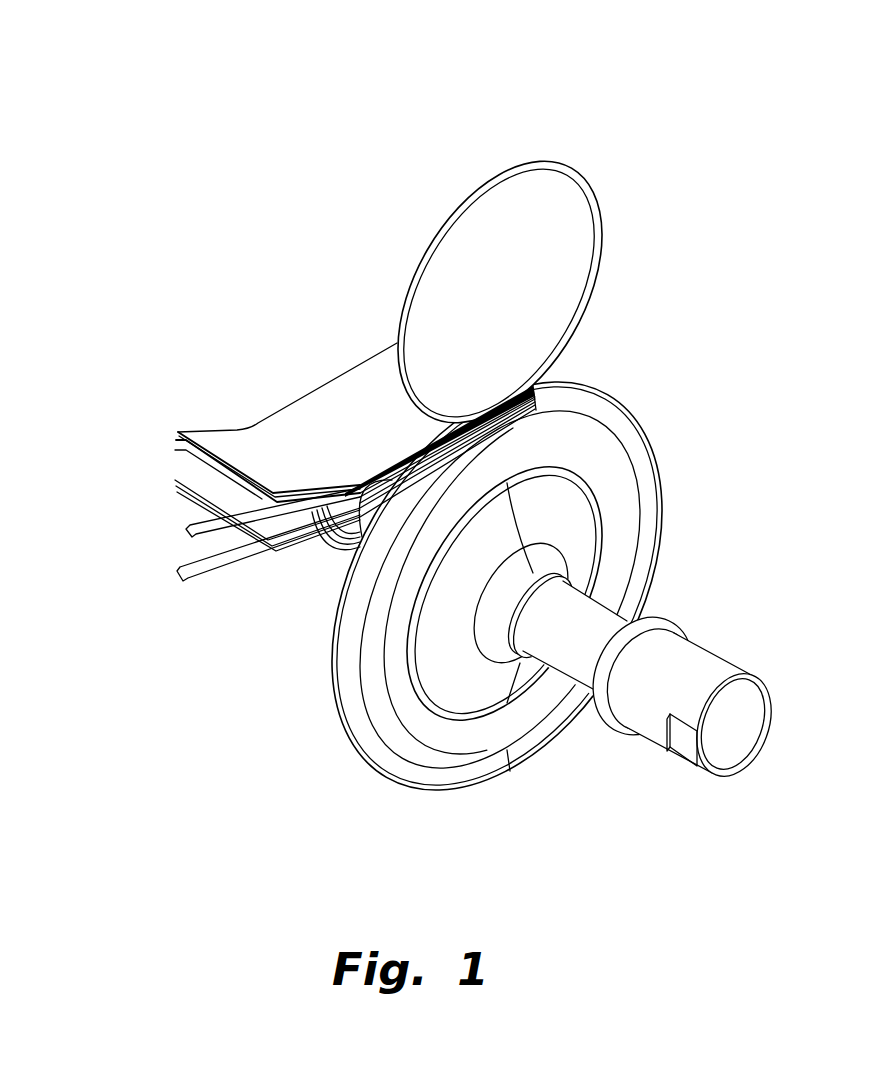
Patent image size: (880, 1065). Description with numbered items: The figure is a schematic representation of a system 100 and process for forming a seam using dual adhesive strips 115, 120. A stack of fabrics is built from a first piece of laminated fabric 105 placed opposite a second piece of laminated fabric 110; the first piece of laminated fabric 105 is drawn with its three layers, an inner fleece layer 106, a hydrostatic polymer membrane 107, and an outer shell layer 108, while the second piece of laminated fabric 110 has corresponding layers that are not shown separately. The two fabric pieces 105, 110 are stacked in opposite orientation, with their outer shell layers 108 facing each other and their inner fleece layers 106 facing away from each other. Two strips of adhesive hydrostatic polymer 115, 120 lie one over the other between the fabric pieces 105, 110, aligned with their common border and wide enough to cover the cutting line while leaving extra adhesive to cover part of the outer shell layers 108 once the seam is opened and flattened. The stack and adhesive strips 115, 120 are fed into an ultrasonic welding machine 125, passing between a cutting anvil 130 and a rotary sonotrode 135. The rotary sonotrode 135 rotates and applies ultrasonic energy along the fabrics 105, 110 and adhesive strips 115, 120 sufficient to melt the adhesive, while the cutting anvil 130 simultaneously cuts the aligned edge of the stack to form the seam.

The system 100 is at (214, 170).
The first piece of laminated fabric 105 is at (236, 392).
The inner fleece layer 106 is at (175, 432).
The hydrostatic polymer membrane 107 is at (175, 447).
The outer shell layer 108 is at (175, 453).
The second piece of laminated fabric 110 is at (160, 485).
The adhesive strip 115 is at (185, 528).
The adhesive strip 120 is at (187, 570).
The ultrasonic welding machine 125 is at (674, 244).
The cutting anvil 130 is at (550, 160).
The rotary sonotrode 135 is at (637, 455).